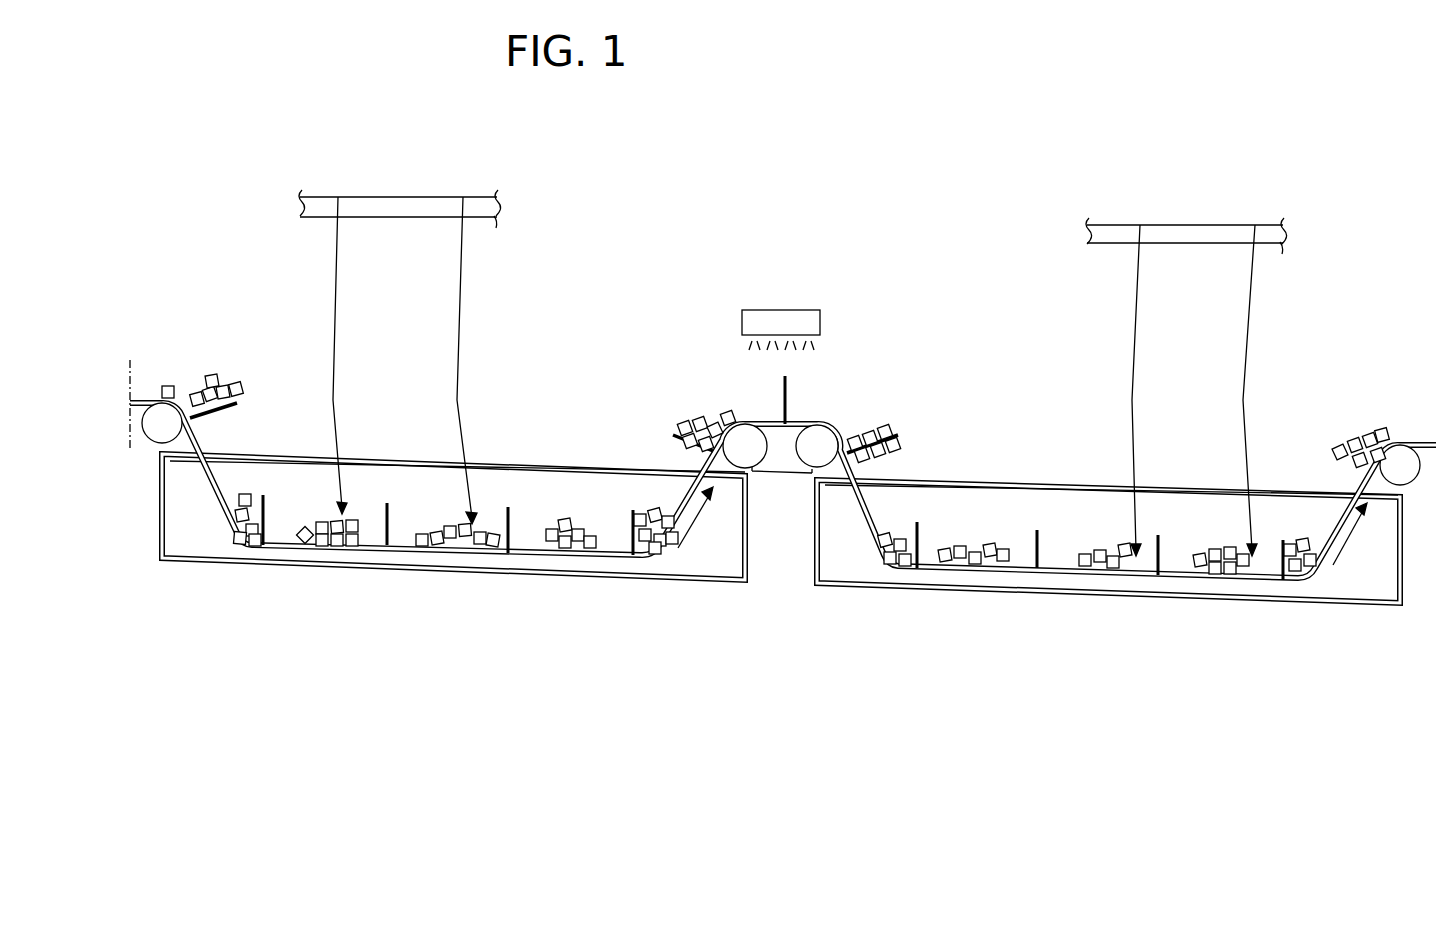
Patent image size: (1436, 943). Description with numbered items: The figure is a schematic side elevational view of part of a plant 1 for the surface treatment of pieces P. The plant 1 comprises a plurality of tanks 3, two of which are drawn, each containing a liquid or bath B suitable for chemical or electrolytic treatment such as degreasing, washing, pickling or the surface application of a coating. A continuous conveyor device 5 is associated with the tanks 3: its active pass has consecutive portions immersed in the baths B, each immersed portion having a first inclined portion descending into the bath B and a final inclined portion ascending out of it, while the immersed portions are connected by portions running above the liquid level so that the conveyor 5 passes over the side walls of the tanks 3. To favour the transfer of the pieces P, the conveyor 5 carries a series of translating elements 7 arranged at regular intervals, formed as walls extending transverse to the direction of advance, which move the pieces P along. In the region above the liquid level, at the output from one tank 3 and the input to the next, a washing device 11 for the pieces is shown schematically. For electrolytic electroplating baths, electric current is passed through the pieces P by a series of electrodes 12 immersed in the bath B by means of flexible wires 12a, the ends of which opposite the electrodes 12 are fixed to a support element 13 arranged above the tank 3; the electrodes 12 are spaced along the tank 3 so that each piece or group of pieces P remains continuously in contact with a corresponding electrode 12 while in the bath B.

The plant for the surface treatment of pieces 1 is at (893, 364).
The tank 3 is at (592, 582).
The continuous conveyor device 5 is at (346, 553).
The translating element 7 is at (388, 501).
The washing device 11 is at (797, 315).
The electrode 12 is at (342, 510).
The flexible wire 12a is at (336, 256).
The support element 13 is at (404, 200).
The bath B is at (428, 480).
The pieces P is at (225, 384).